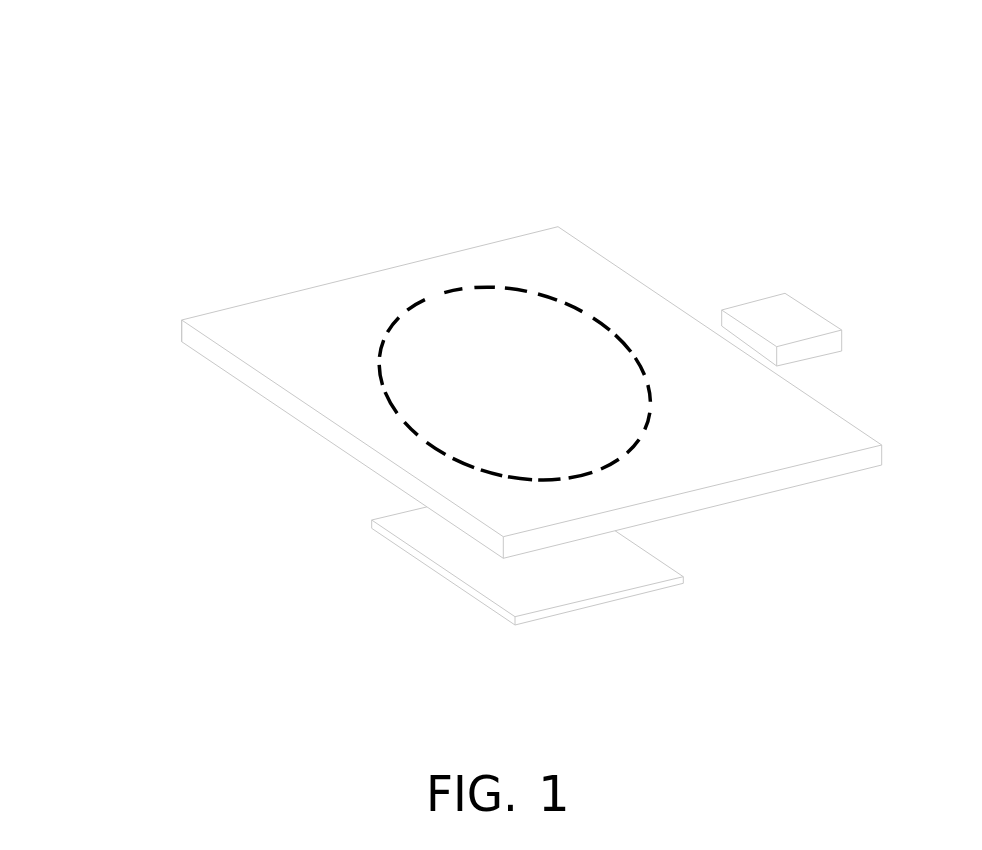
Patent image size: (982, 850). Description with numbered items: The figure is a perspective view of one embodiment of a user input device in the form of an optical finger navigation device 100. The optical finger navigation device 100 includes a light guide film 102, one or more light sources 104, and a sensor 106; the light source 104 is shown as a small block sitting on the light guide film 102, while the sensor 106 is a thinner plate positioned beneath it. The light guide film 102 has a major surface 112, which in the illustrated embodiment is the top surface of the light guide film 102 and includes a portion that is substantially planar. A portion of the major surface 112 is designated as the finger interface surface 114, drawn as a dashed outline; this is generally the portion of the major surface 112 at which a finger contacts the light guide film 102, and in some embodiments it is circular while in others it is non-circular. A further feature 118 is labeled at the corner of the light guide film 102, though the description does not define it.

The optical finger navigation device 100 is at (180, 64).
The light guide film 102 is at (792, 485).
The light source 104 is at (787, 294).
The sensor 106 is at (370, 518).
The major surface 112 is at (628, 283).
The finger interface surface 114 is at (433, 288).
The edge of substrate 118 is at (182, 320).